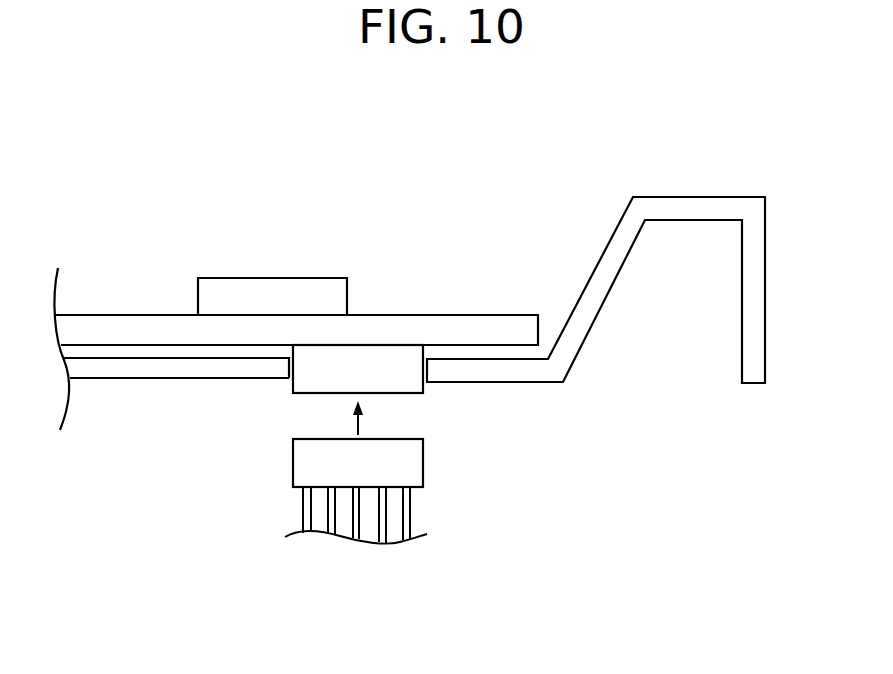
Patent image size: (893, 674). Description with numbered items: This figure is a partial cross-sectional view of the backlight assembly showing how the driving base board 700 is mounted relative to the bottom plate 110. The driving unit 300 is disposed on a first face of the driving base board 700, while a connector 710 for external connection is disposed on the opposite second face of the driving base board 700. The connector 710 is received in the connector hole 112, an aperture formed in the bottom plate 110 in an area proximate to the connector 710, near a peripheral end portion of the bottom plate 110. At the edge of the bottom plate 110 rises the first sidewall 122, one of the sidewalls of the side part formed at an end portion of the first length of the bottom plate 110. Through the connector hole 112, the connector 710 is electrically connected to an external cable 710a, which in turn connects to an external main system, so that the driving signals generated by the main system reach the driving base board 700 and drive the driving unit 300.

The bottom plate 110 is at (147, 370).
The connector hole 112 is at (287, 368).
The first sidewall 122 is at (595, 293).
The driving unit 300 is at (279, 262).
The driving base board 700 is at (497, 330).
The connector 710 is at (392, 360).
The external cable 710a is at (413, 463).